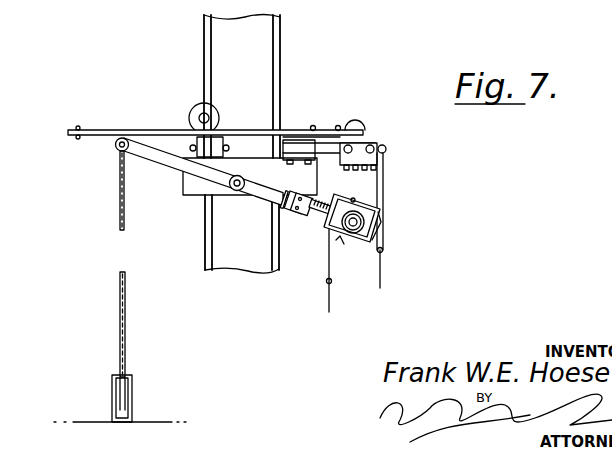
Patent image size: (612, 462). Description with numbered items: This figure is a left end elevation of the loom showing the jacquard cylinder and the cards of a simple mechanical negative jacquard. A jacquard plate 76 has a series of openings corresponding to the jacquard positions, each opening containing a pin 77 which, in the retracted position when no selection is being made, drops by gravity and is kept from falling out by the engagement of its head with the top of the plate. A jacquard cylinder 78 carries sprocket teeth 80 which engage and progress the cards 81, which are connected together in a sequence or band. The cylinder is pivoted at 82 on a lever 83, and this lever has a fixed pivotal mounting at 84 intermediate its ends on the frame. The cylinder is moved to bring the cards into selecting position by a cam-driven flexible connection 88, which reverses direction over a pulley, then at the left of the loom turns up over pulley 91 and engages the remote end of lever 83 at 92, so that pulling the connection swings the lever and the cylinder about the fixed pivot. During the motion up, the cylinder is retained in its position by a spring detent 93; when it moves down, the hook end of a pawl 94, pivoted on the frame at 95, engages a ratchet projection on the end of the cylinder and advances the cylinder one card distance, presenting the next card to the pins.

The jacquard plate 76 is at (365, 146).
The pin 77 is at (383, 168).
The jacquard cylinder 78 is at (382, 221).
The sprocket teeth 80 is at (355, 200).
The cards 81 is at (381, 285).
The pivot 82 is at (354, 232).
The lever 83 is at (261, 252).
The fixed pivotal mounting 84 is at (238, 191).
The flexible connection 88 is at (120, 328).
The pulley 91 is at (126, 393).
The engagement point 92 is at (117, 147).
The spring detent 93 is at (318, 214).
The pawl 94 is at (385, 205).
The pivot 95 is at (386, 151).